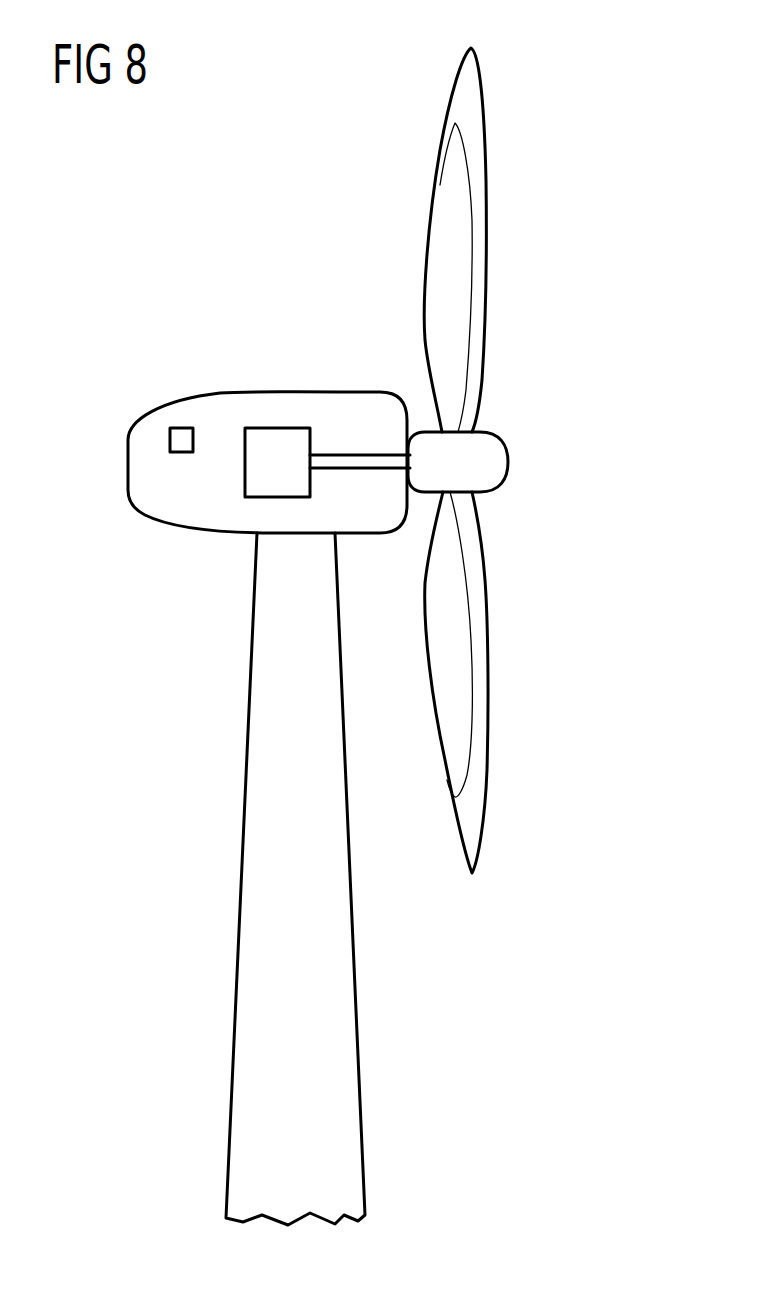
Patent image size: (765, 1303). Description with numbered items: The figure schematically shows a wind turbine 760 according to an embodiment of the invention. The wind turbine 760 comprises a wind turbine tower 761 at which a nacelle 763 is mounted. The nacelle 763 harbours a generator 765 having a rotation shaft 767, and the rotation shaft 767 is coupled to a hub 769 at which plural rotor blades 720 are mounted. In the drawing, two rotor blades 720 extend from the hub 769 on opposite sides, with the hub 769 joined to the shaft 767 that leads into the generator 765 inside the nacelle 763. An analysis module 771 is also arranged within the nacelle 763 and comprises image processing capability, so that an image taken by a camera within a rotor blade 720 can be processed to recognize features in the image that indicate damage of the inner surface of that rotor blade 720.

The wind turbine 760 is at (568, 297).
The wind turbine tower 761 is at (260, 693).
The nacelle 763 is at (140, 467).
The generator 765 is at (282, 448).
The rotation shaft 767 is at (367, 463).
The hub 769 is at (497, 460).
The analysis module 771 is at (181, 440).
The rotor blade 720 is at (475, 175).